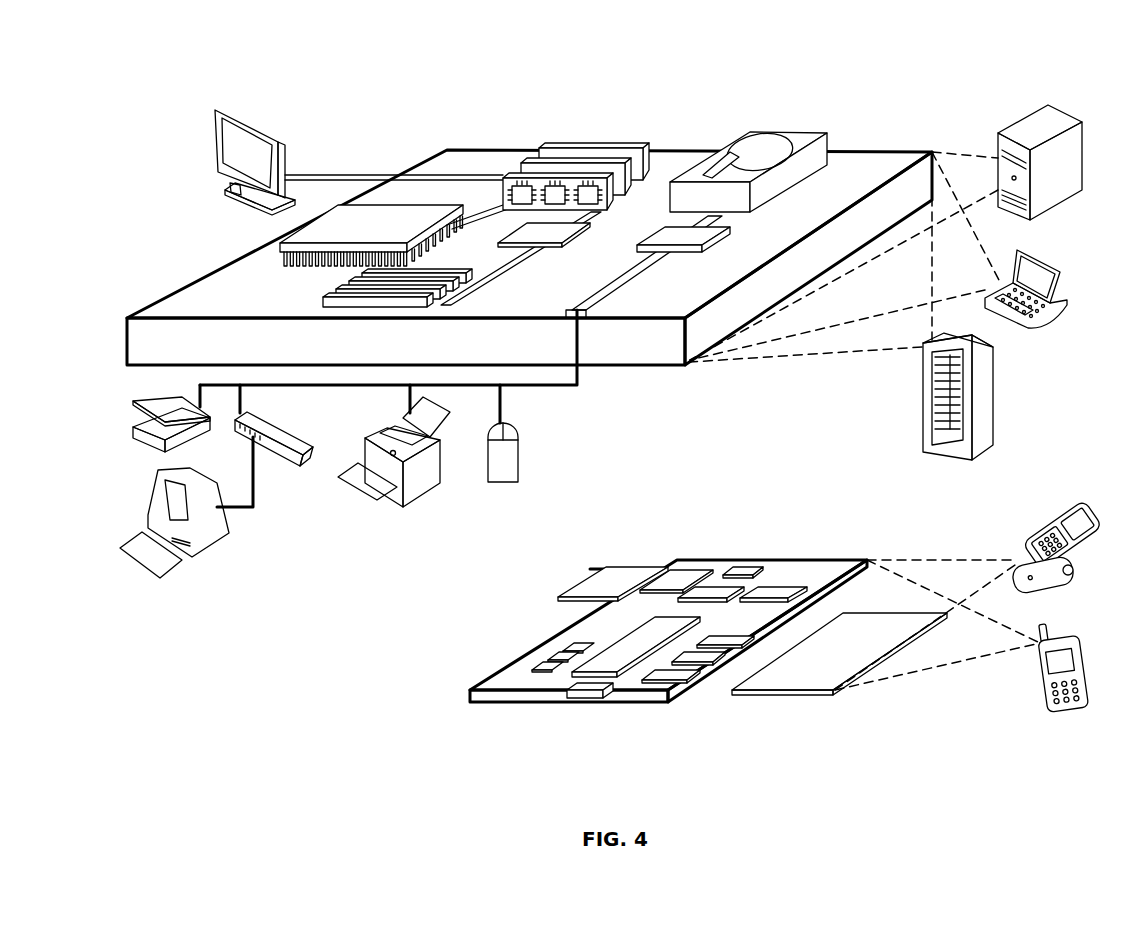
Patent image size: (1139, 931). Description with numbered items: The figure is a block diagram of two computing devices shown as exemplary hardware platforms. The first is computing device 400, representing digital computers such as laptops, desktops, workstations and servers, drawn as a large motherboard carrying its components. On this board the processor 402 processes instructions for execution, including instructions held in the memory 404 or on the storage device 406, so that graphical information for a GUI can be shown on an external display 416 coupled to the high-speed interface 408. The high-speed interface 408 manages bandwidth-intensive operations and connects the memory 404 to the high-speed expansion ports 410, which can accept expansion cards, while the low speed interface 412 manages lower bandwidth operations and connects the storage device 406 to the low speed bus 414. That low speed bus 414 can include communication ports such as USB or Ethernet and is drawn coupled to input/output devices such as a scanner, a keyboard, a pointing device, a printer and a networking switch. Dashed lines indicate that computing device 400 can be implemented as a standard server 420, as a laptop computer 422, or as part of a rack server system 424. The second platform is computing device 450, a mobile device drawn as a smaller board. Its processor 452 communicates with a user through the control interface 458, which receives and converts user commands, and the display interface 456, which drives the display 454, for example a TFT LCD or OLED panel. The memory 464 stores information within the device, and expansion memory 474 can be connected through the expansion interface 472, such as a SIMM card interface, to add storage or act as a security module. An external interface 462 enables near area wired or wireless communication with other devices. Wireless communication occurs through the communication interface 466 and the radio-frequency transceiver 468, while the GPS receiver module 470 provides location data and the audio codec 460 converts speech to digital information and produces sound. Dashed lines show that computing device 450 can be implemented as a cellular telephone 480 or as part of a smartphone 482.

The computing device 400 is at (367, 76).
The processor 402 is at (283, 252).
The memory 404 is at (557, 143).
The storage device 406 is at (743, 135).
The high-speed interface 408 is at (528, 233).
The high-speed expansion ports 410 is at (340, 288).
The low speed interface 412 is at (687, 237).
The low speed bus 414 is at (580, 318).
The display 416 is at (213, 113).
The standard server 420 is at (998, 140).
The laptop computer 422 is at (1022, 255).
The rack server system 424 is at (921, 420).
The computing device 450 is at (656, 541).
The processor 452 is at (618, 680).
The display 454 is at (838, 690).
The display interface 456 is at (675, 692).
The control interface 458 is at (708, 685).
The audio codec 460 is at (715, 640).
The external interface 462 is at (588, 692).
The memory 464 is at (545, 662).
The communication interface 466 is at (712, 590).
The transceiver 468 is at (778, 585).
The GPS receiver module 470 is at (745, 576).
The expansion interface 472 is at (650, 569).
The expansion memory 474 is at (592, 569).
The cellular telephone 480 is at (1062, 512).
The smartphone 482 is at (1047, 627).